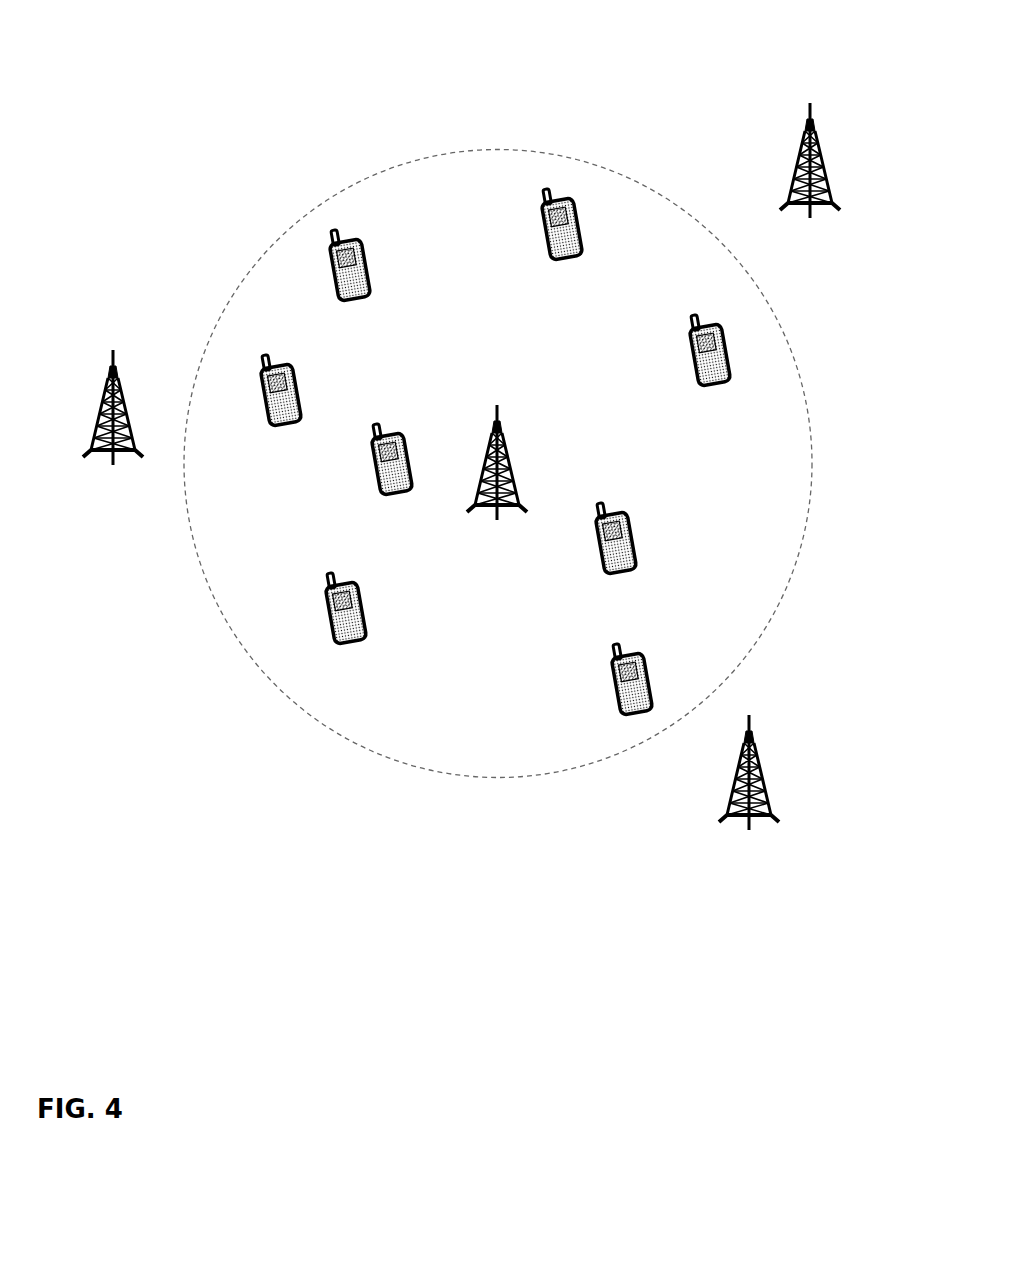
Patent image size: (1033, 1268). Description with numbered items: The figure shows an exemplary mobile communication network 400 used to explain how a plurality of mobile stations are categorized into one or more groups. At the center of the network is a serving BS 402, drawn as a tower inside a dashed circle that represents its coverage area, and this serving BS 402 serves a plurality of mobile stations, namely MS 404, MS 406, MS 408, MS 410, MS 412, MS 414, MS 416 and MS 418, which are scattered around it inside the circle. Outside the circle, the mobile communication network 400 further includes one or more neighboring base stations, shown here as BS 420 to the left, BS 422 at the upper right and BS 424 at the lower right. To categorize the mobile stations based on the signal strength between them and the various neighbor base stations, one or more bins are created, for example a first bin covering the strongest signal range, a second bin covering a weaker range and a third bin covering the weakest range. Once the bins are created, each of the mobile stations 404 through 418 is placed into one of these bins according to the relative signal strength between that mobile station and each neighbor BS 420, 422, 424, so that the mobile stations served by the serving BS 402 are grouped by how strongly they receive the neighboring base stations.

The mobile communication network 400 is at (368, 46).
The serving BS 402 is at (507, 445).
The MS 404 is at (302, 390).
The MS 406 is at (368, 255).
The MS 408 is at (583, 248).
The MS 410 is at (690, 340).
The MS 412 is at (640, 525).
The MS 414 is at (655, 668).
The MS 416 is at (365, 605).
The MS 418 is at (412, 445).
The BS 420 is at (110, 393).
The BS 422 is at (818, 143).
The BS 424 is at (757, 750).